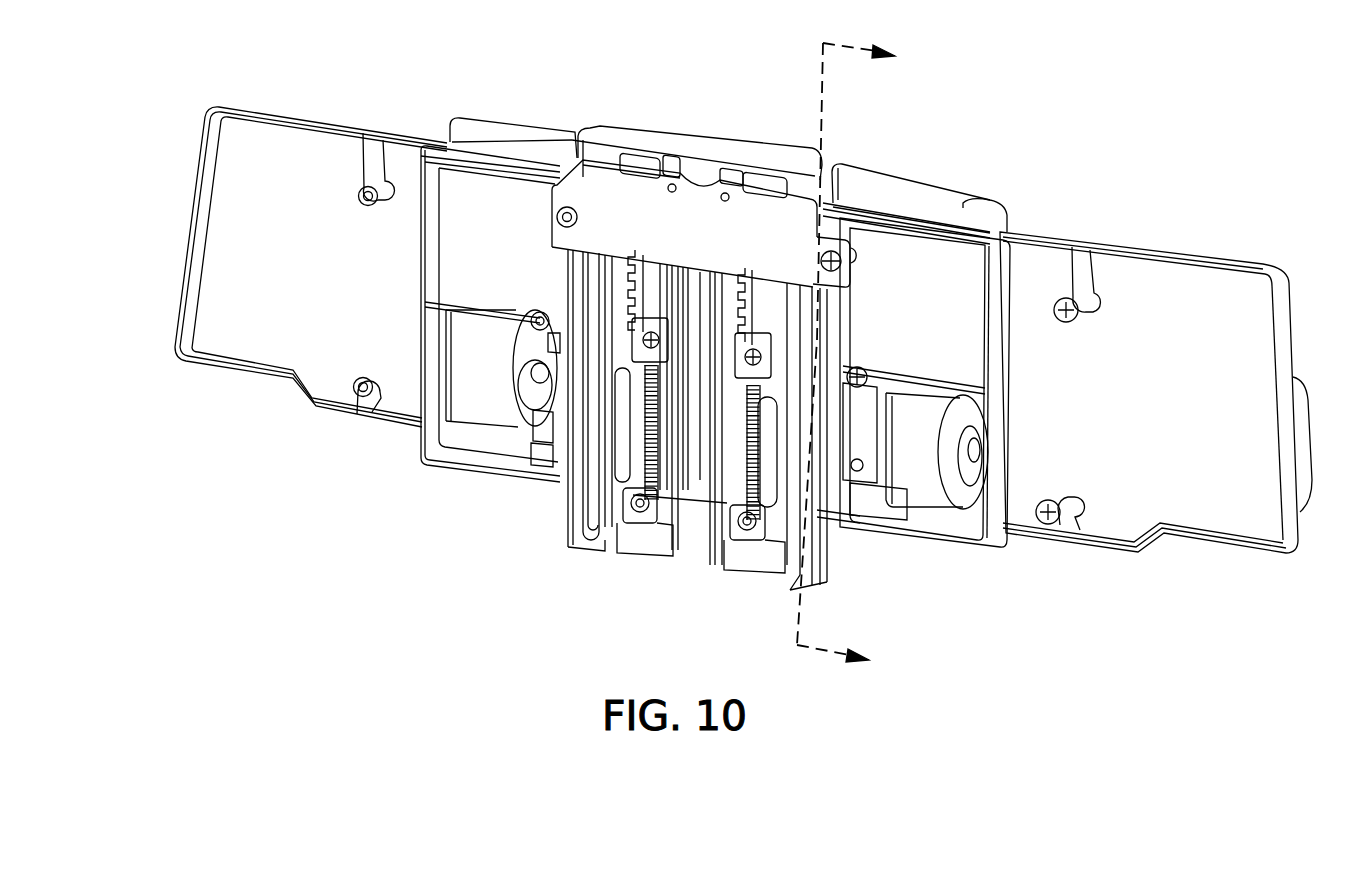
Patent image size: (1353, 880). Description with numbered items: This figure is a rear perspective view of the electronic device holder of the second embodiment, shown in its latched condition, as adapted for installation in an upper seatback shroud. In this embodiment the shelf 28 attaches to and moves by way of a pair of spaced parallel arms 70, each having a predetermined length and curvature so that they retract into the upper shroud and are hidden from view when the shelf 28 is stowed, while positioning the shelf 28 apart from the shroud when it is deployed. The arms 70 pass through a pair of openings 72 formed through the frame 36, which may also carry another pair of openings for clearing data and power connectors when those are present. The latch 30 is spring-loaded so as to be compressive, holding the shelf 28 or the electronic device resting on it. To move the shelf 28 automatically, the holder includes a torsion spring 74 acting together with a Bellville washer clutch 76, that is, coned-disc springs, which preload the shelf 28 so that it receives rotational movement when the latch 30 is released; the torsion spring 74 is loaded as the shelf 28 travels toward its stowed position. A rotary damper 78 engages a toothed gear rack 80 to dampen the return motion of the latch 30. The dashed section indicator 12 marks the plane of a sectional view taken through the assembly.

The section line 12- 12 is at (861, 360).
The shelf 28 is at (925, 192).
The latch 30 is at (780, 157).
The frame 36 is at (1170, 272).
The arms 70 is at (470, 407).
The openings 72 is at (548, 430).
The torsion spring 74 is at (535, 318).
The Bellville washer clutch 76 is at (548, 345).
The rotary damper 78 is at (713, 162).
The toothed gear rack 80 is at (712, 455).